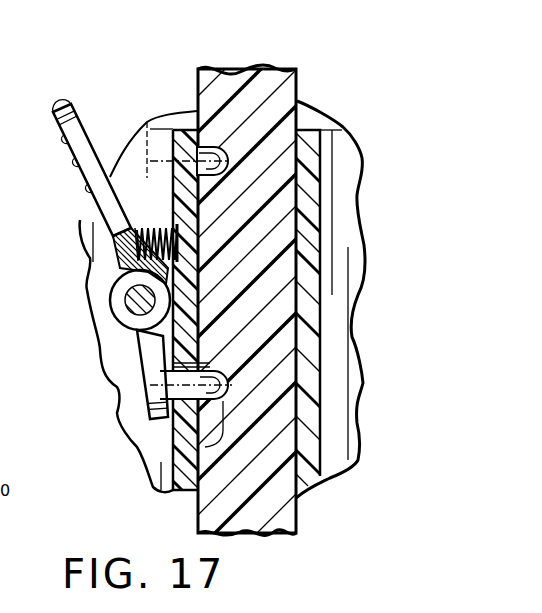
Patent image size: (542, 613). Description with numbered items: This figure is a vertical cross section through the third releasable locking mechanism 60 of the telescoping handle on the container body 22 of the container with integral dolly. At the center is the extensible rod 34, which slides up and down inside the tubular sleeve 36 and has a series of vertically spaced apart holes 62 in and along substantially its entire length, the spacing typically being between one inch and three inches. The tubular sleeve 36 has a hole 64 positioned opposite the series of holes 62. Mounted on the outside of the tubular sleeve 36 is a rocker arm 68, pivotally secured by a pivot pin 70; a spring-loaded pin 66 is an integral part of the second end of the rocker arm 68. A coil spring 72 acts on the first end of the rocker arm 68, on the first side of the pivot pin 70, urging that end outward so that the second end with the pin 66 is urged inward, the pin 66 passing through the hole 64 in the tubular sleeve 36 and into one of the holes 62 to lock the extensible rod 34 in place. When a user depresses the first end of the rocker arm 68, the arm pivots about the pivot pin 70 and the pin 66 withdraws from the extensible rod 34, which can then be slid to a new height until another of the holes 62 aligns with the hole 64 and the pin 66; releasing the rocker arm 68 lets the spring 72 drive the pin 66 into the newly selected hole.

The container body 22 is at (368, 150).
The extensible rod 34 is at (234, 102).
The tubular sleeve 36 is at (307, 428).
The third releasable locking mechanism 60 is at (340, 82).
The vertically spaced apart holes 62 is at (198, 166).
The hole in the tubular sleeve 64 is at (190, 433).
The spring-loaded pin 66 is at (177, 383).
The rocker arm 68 is at (55, 146).
The pivot pin 70 is at (112, 312).
The coil spring 72 is at (143, 208).